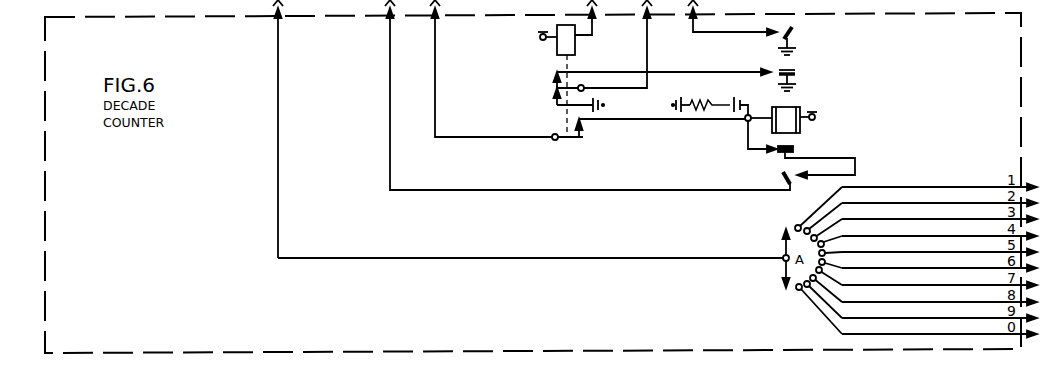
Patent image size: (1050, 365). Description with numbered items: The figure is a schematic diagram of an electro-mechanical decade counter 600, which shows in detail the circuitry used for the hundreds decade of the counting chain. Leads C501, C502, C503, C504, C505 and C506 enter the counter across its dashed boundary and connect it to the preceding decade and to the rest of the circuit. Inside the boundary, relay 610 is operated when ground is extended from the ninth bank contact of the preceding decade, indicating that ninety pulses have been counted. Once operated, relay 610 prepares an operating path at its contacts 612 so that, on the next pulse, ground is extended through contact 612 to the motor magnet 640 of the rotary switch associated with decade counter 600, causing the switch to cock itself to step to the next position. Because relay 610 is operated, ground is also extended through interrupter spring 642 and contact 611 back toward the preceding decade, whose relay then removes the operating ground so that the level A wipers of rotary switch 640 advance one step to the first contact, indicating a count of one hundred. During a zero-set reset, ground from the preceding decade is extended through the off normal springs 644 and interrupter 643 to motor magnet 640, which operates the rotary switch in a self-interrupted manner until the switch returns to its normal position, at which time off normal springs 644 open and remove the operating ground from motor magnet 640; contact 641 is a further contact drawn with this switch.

The decade counter 600 is at (146, 154).
The lead C501 is at (278, 36).
The conductor C502 is at (390, 36).
The conductor C503 is at (435, 38).
The conductor C504 is at (597, 28).
The conductor C505 is at (658, 86).
The conductor C506 is at (742, 34).
The relay 610 is at (556, 51).
The contact 611 is at (553, 84).
The contacts 612 is at (586, 129).
The motor magnet 640 is at (795, 107).
The relay contact 641 is at (796, 33).
The interrupter spring 642 is at (801, 72).
The interrupter 643 is at (797, 148).
The off normal springs 644 is at (793, 178).